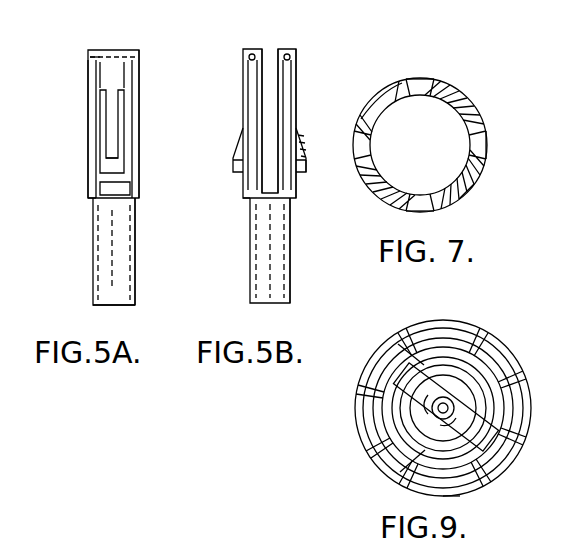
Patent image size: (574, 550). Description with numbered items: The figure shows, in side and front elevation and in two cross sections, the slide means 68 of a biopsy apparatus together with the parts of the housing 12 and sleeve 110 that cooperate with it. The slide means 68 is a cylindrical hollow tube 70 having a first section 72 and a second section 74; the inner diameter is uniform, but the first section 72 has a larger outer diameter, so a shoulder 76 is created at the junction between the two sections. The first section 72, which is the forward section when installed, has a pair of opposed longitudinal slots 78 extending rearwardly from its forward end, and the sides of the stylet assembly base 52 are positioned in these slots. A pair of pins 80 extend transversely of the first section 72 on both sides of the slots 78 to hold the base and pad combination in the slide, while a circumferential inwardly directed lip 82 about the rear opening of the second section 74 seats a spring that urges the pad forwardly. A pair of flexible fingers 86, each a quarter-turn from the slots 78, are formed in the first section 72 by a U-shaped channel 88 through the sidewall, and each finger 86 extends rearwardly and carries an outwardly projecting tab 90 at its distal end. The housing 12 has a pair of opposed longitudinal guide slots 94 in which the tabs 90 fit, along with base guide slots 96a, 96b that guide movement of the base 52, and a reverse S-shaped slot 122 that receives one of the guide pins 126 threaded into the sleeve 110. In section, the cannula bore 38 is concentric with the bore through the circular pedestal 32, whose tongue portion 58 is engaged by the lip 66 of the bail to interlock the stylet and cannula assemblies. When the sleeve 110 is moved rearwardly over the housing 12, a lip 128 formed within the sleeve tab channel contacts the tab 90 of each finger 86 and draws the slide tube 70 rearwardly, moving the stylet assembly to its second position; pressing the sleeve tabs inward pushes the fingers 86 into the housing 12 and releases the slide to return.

In FIG. 7, the housing 12 is at (380, 212).
In FIG. 9, the housing 12 is at (514, 402).
In FIG. 9, the circular pedestal 32 is at (437, 345).
In FIG. 9, the longitudinal bore 38 is at (343, 440).
In FIG. 9, the base 52 is at (400, 345).
In FIG. 9, the tongue portion 58 is at (400, 418).
In FIG. 9, the lip 66 is at (404, 472).
In FIG. 5A, the slide means 68 is at (66, 281).
In FIG. 5B, the slide means 68 is at (305, 75).
In FIG. 5A, the cylindrical hollow tube 70 is at (150, 70).
In FIG. 5B, the cylindrical hollow tube 70 is at (306, 105).
In FIG. 5A, the first section 72 is at (88, 112).
In FIG. 5B, the first section 72 is at (304, 110).
In FIG. 5A, the second section 74 is at (135, 237).
In FIG. 5B, the second section 74 is at (290, 249).
In FIG. 5A, the shoulder 76 is at (90, 200).
In FIG. 5B, the shoulder 76 is at (246, 198).
In FIG. 5B, the longitudinal slots 78 is at (262, 100).
In FIG. 5A, the pins 80 is at (95, 70).
In FIG. 5B, the pins 80 is at (278, 65).
In FIG. 5A, the circumferential inwardly directed lip 82 is at (99, 306).
In FIG. 5A, the flexible fingers 86 is at (105, 140).
In FIG. 5B, the flexible fingers 86 is at (232, 162).
In FIG. 5A, the U-shaped channel 88 is at (105, 170).
In FIG. 5A, the outwardly projecting tab 90 is at (122, 165).
In FIG. 5B, the outwardly projecting tab 90 is at (235, 172).
In FIG. 9, the outwardly projecting tab 90 is at (512, 348).
In FIG. 5B, the longitudinal guide slots 94 is at (308, 160).
In FIG. 7, the longitudinal guide slots 94 is at (487, 148).
In FIG. 7, the base guide slot 96a is at (432, 82).
In FIG. 7, the base guide slot 96b is at (418, 213).
In FIG. 9, the sleeve 110 is at (445, 497).
In FIG. 7, the elongate longitudinal slot 122 is at (471, 186).
In FIG. 9, the guide pins 126 is at (378, 372).
In FIG. 9, the lip 128 is at (356, 410).